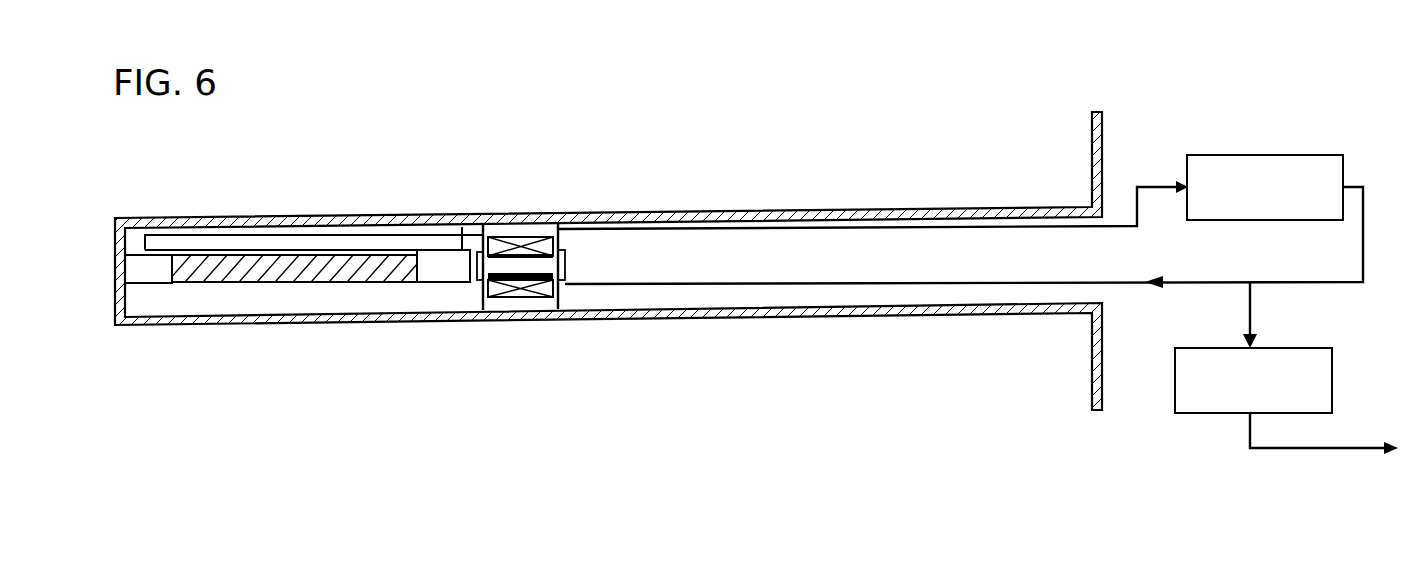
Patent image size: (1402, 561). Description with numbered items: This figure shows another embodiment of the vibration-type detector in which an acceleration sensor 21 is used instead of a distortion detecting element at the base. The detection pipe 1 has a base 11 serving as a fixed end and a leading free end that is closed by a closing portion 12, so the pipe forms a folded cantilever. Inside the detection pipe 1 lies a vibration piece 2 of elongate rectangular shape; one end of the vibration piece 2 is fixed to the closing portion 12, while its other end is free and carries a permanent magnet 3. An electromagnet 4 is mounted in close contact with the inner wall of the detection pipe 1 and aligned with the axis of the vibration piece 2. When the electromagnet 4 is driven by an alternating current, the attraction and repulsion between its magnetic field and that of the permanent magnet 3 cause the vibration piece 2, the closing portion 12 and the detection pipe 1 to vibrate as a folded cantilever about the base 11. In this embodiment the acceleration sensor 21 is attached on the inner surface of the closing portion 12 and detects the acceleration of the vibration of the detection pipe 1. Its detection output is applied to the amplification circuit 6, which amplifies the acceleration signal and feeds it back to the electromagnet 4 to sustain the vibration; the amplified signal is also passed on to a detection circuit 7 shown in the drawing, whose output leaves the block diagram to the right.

The detection pipe 1 is at (645, 212).
The vibration piece 2 is at (300, 256).
The permanent magnet 3 is at (453, 263).
The electromagnet 4 is at (520, 248).
The amplification circuit 6 is at (1270, 154).
The detection circuit 7 is at (1295, 348).
The base 11 is at (1092, 177).
The closing portion 12 is at (113, 259).
The acceleration sensor 21 is at (145, 276).